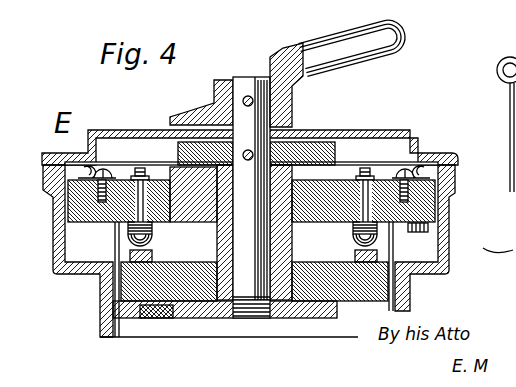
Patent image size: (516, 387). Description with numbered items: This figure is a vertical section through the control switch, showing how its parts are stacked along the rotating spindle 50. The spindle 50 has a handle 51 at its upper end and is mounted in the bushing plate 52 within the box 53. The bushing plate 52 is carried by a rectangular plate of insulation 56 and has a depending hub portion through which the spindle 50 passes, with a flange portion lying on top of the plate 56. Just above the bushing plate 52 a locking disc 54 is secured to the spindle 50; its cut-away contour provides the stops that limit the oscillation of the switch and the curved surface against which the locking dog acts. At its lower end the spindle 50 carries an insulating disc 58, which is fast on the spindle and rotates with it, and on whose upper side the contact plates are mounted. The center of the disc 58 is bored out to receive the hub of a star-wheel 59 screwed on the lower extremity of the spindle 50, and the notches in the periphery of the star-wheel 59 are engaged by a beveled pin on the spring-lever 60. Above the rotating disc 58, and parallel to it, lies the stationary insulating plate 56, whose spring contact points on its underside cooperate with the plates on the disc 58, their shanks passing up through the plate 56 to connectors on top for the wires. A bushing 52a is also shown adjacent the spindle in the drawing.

The rotating spindle 50 is at (245, 77).
The handle 51 is at (276, 58).
The bushing plate 52 is at (355, 140).
The insulating bushing 52a is at (213, 245).
The box 53 is at (458, 163).
The locking disc 54 is at (308, 147).
The rectangular plate of insulation 56 is at (63, 207).
The insulating disc 58 is at (133, 304).
The star-wheel 59 is at (301, 319).
The spring-lever 60 is at (158, 318).